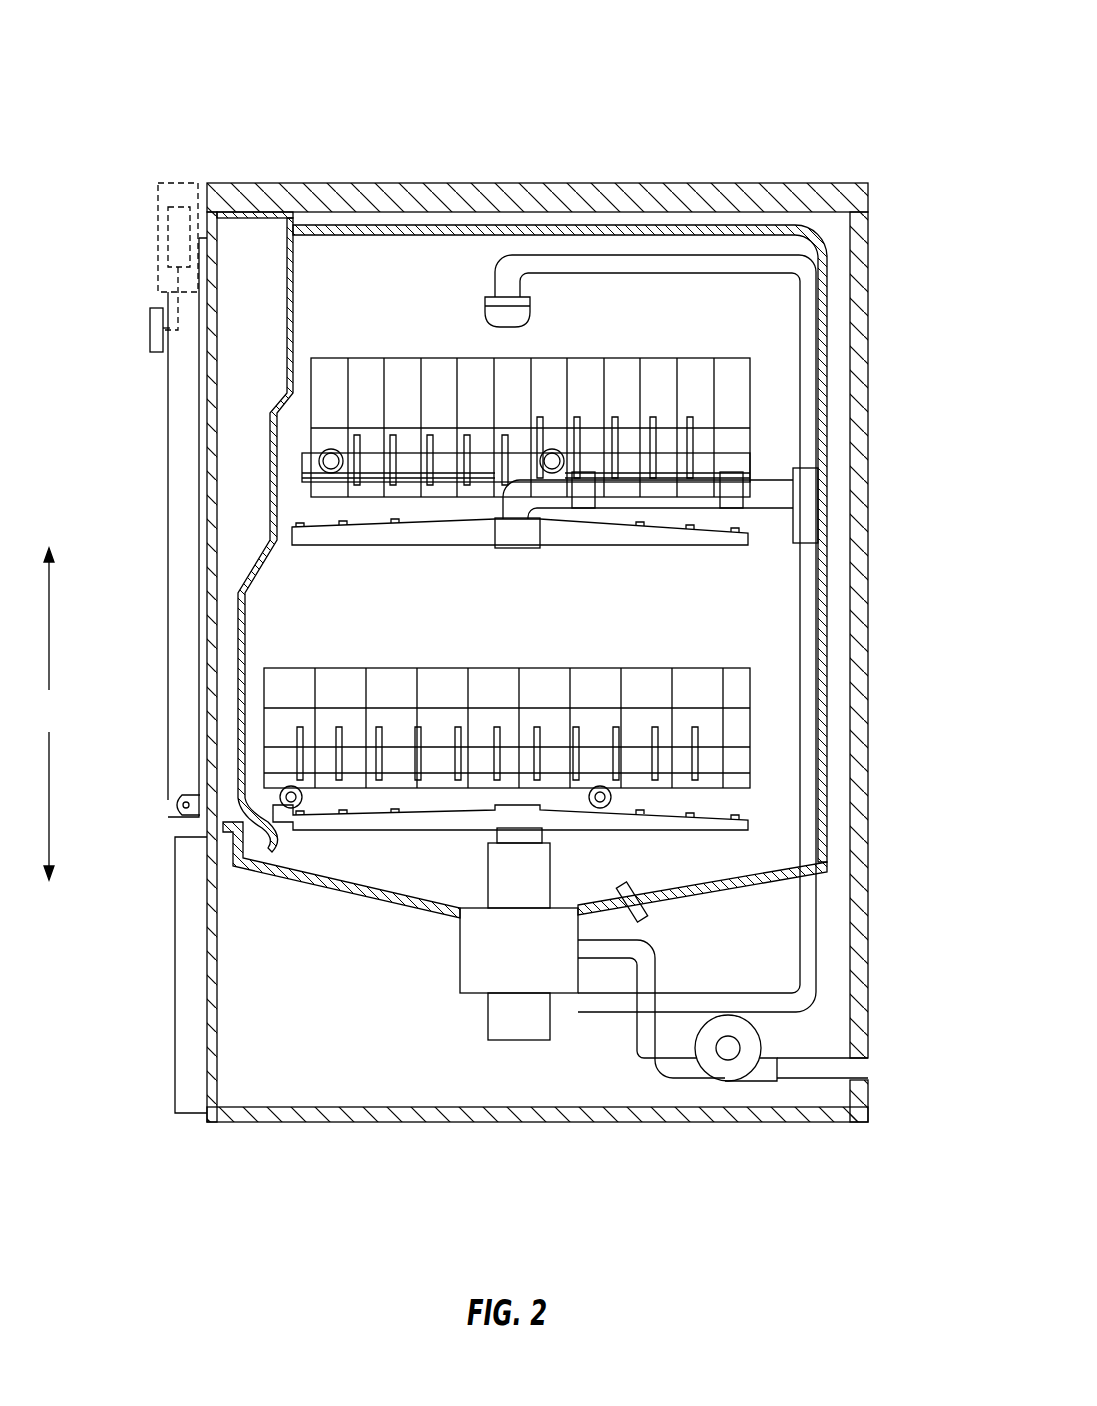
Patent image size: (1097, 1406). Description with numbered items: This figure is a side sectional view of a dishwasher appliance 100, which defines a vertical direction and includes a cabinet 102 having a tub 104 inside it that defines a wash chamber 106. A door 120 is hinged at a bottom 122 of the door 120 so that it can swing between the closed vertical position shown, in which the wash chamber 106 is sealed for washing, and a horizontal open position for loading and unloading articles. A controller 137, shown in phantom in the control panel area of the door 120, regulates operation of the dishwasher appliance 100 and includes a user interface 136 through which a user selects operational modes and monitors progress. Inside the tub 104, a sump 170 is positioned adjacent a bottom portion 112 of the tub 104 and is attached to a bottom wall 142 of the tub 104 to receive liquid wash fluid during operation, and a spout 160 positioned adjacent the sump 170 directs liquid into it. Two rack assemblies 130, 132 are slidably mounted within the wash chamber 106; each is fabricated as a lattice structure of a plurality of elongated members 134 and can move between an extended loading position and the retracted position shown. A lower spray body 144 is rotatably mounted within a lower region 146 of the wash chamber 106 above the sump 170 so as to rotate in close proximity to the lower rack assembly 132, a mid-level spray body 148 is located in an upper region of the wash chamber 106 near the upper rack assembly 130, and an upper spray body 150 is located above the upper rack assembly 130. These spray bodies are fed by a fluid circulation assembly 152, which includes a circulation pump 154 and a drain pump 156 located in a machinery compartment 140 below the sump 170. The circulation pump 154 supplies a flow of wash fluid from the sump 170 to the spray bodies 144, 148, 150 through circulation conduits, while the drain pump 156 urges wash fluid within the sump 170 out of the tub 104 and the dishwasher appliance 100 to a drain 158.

The dishwasher appliance 100 is at (737, 58).
The cabinet 102 is at (868, 240).
The tub 104 is at (822, 672).
The wash chamber 106 is at (283, 603).
The bottom portion 112 is at (210, 1130).
The door 120 is at (168, 680).
The bottom of door 122 is at (168, 812).
The rack assembly 130 is at (356, 348).
The rack assembly 132 is at (603, 665).
The elongated members 134 is at (400, 428).
The user interface 136 is at (152, 325).
The controller 137 is at (160, 235).
The machinery compartment 140 is at (345, 1085).
The bottom wall 142 is at (788, 878).
The lower spray body 144 is at (352, 825).
The lower region 146 is at (763, 838).
The mid-level spray body 148 is at (563, 535).
The upper spray body 150 is at (535, 325).
The fluid circulation assembly 152 is at (808, 332).
The circulation pump 154 is at (500, 1030).
The drain pump 156 is at (725, 1075).
The drain 158 is at (874, 1072).
The spout 160 is at (642, 912).
The sump 170 is at (445, 945).